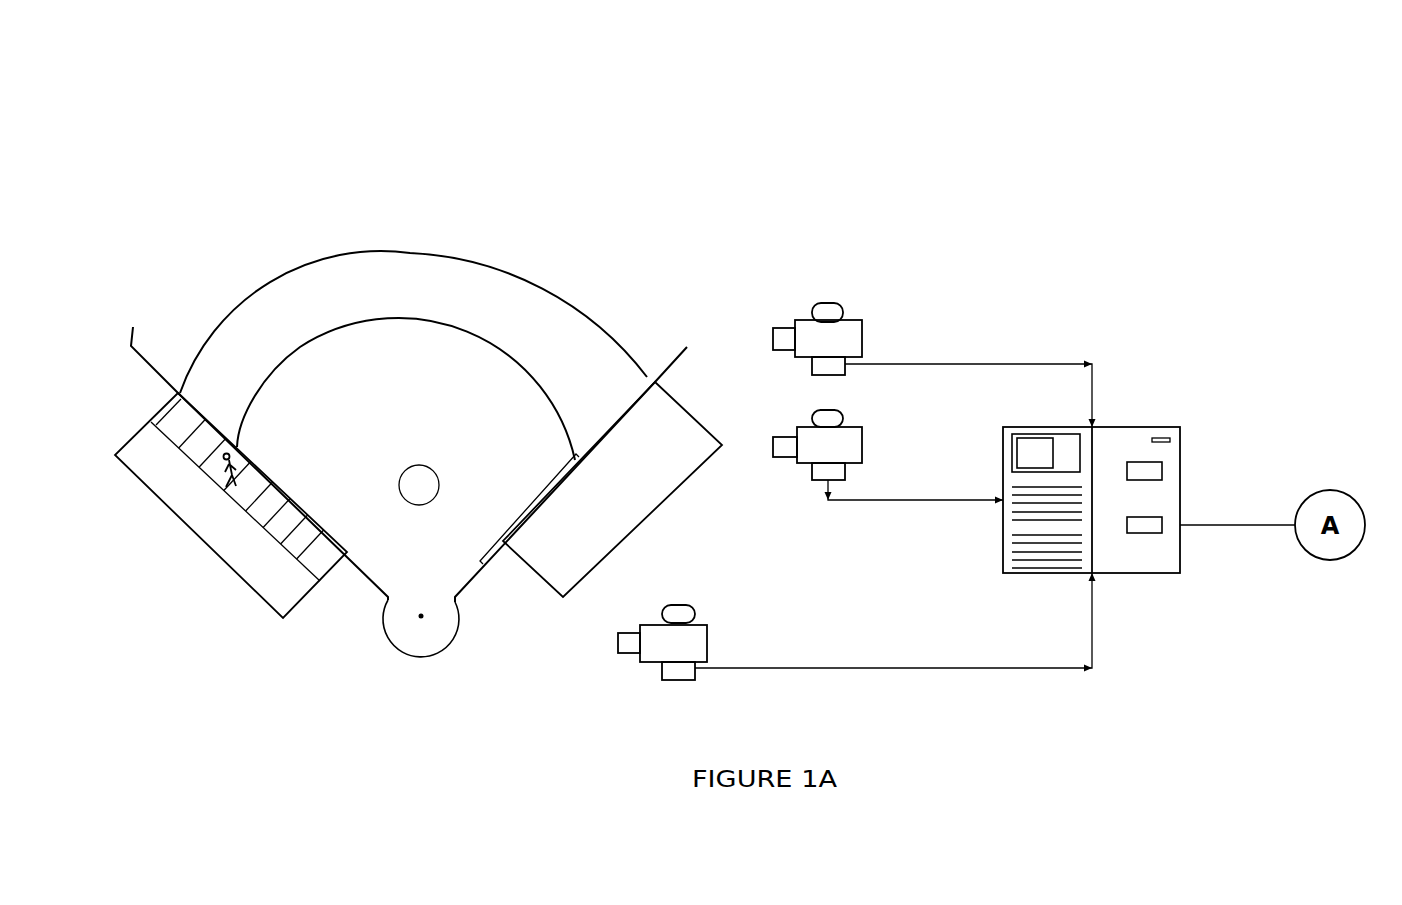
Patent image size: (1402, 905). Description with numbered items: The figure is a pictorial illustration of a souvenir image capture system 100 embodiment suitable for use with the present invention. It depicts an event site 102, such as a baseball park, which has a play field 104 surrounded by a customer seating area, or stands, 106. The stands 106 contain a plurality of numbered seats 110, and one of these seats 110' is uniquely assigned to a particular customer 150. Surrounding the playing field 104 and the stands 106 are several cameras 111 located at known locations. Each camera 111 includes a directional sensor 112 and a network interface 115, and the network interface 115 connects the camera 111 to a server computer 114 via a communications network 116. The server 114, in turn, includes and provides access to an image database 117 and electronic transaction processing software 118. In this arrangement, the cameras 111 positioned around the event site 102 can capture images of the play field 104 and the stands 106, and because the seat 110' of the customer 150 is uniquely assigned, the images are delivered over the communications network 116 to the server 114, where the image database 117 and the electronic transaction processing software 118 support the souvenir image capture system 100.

The image capture system 100 is at (827, 185).
The event site 102 is at (380, 223).
The play field 104 is at (436, 381).
The customer seating area 106 is at (523, 320).
The numbered seats 110 is at (170, 564).
The seat 110' is at (283, 458).
The cameras 111 is at (862, 347).
The directional sensor 112 is at (827, 303).
The server computer 114 is at (1122, 447).
The network interface 115 is at (812, 367).
The communications network 116 is at (943, 364).
The image database 117 is at (1162, 475).
The electronic transaction processing software 118 is at (1143, 535).
The customer 150 is at (237, 448).